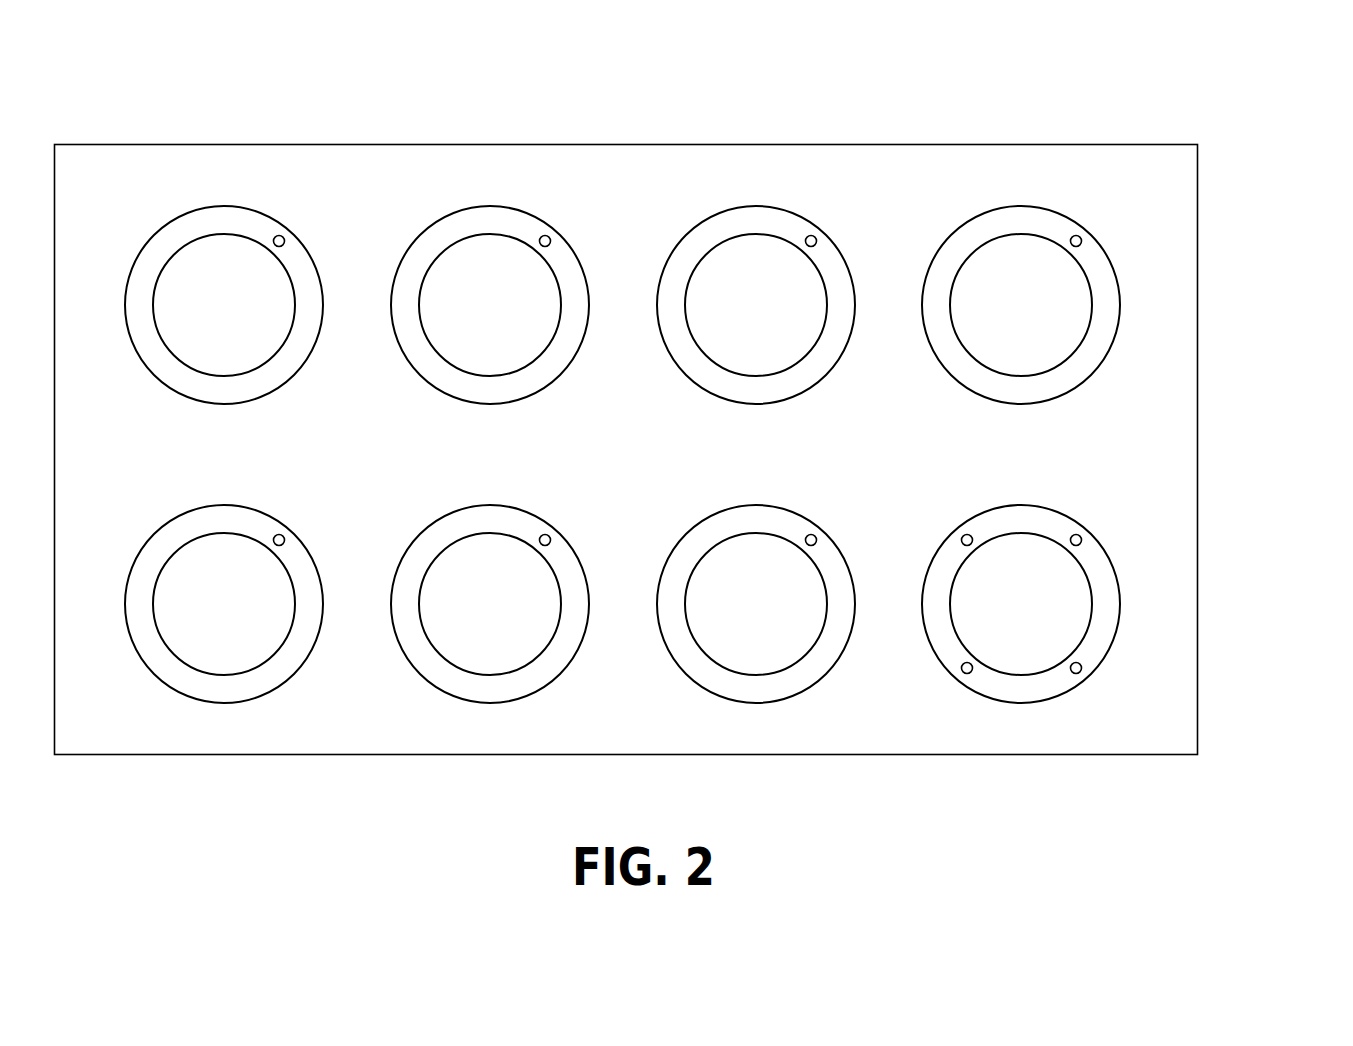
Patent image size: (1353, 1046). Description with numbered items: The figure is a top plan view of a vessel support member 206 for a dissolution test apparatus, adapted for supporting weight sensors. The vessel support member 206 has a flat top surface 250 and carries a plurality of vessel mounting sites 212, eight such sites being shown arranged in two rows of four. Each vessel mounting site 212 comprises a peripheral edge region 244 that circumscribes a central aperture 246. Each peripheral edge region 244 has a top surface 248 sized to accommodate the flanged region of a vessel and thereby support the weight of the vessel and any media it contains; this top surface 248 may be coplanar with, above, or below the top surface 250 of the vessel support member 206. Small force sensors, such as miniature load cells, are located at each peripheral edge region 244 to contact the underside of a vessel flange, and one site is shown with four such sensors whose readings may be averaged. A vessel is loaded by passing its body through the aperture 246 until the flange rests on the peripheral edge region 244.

The vessel support member 206 is at (1296, 160).
The top surface 250 is at (604, 182).
The vessel mounting site 212 is at (857, 208).
The peripheral edge region 244 is at (1116, 359).
The top surface 248 is at (1110, 304).
The aperture 246 is at (1050, 352).